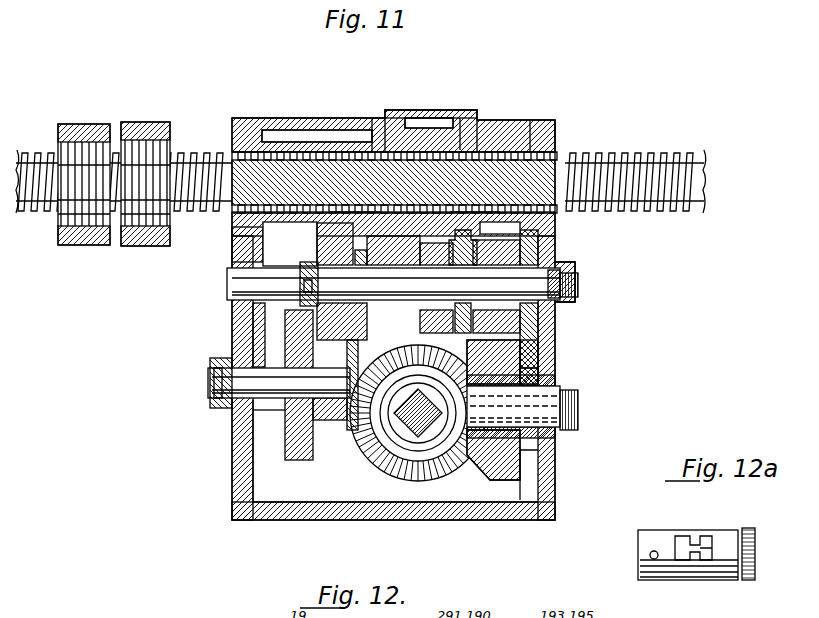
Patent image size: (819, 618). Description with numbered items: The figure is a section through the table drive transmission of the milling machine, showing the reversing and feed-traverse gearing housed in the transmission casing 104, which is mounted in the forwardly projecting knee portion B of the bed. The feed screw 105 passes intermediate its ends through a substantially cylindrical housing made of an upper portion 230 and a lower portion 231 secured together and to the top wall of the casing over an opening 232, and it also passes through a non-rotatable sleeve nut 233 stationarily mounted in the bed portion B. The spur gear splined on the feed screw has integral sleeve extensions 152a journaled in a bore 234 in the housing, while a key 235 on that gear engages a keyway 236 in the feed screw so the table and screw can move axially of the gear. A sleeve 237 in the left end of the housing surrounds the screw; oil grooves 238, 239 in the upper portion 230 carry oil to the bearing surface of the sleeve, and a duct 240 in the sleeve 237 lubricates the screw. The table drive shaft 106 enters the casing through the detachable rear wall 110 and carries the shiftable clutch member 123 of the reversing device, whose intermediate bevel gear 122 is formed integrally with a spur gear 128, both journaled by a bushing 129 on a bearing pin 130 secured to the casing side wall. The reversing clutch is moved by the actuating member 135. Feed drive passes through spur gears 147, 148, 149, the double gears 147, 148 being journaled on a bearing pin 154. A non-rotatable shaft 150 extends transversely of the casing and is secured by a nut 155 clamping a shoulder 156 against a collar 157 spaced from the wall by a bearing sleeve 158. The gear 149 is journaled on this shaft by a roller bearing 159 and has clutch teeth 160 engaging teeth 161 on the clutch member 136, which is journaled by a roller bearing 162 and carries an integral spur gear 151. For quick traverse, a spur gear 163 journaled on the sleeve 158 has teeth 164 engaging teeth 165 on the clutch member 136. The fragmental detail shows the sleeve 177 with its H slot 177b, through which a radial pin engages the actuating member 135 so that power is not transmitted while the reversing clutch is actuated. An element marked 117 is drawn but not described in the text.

In FIG. 11, the transmission casing 104 is at (568, 490).
In FIG. 11, the feed screw 105 is at (700, 218).
In FIG. 11, the table drive shaft 106 is at (412, 425).
In FIG. 11, the detachable rear wall 110 is at (265, 468).
In FIG. 11, the bearing 117 is at (447, 487).
In FIG. 11, the intermediate bevel gear 122 is at (492, 482).
In FIG. 11, the shiftable clutch member 123 is at (405, 470).
In FIG. 11, the spur gear 128 is at (540, 452).
In FIG. 11, the bushing 129 is at (545, 360).
In FIG. 11, the bearing pin 130 is at (580, 402).
In FIG. 11, the actuating member 135 is at (340, 448).
In FIG. 11, the clutch member 136 is at (405, 205).
In FIG. 11, the spur gear 147 is at (285, 436).
In FIG. 11, the spur gear 148 is at (348, 410).
In FIG. 11, the spur gear 149 is at (253, 326).
In FIG. 11, the non-rotatable shaft 150 is at (582, 288).
In FIG. 11, the spur gear 151 is at (540, 343).
In FIG. 11, the sleeve extensions 152a is at (373, 116).
In FIG. 11, the bearing pin 154 is at (210, 385).
In FIG. 11, the nut 155 is at (600, 282).
In FIG. 11, the shoulder 156 is at (406, 298).
In FIG. 11, the collar 157 is at (580, 275).
In FIG. 11, the bearing sleeve 158 is at (560, 262).
In FIG. 11, the roller bearing 159 is at (302, 272).
In FIG. 11, the clutch teeth 160 is at (348, 296).
In FIG. 11, the clutch teeth 161 is at (343, 372).
In FIG. 11, the roller bearing 162 is at (535, 327).
In FIG. 11, the spur gear 163 is at (535, 313).
In FIG. 11, the teeth 164 is at (578, 296).
In FIG. 11, the teeth 165 is at (433, 270).
In FIG. 12A, the sleeve 177 is at (745, 528).
In FIG. 12A, the H slot 177b is at (706, 530).
In FIG. 11, the upper housing portion 230 is at (556, 120).
In FIG. 11, the lower housing portion 231 is at (557, 223).
In FIG. 11, the opening 232 is at (232, 262).
In FIG. 11, the sleeve nut 233 is at (82, 250).
In FIG. 11, the bore 234 is at (555, 240).
In FIG. 11, the key 235 is at (485, 120).
In FIG. 11, the keyway 236 is at (572, 152).
In FIG. 11, the sleeve 237 is at (345, 140).
In FIG. 11, the oil groove 238 is at (533, 118).
In FIG. 11, the oil groove 239 is at (412, 124).
In FIG. 11, the duct 240 is at (290, 134).
In FIG. 11, the knee portion B is at (150, 250).